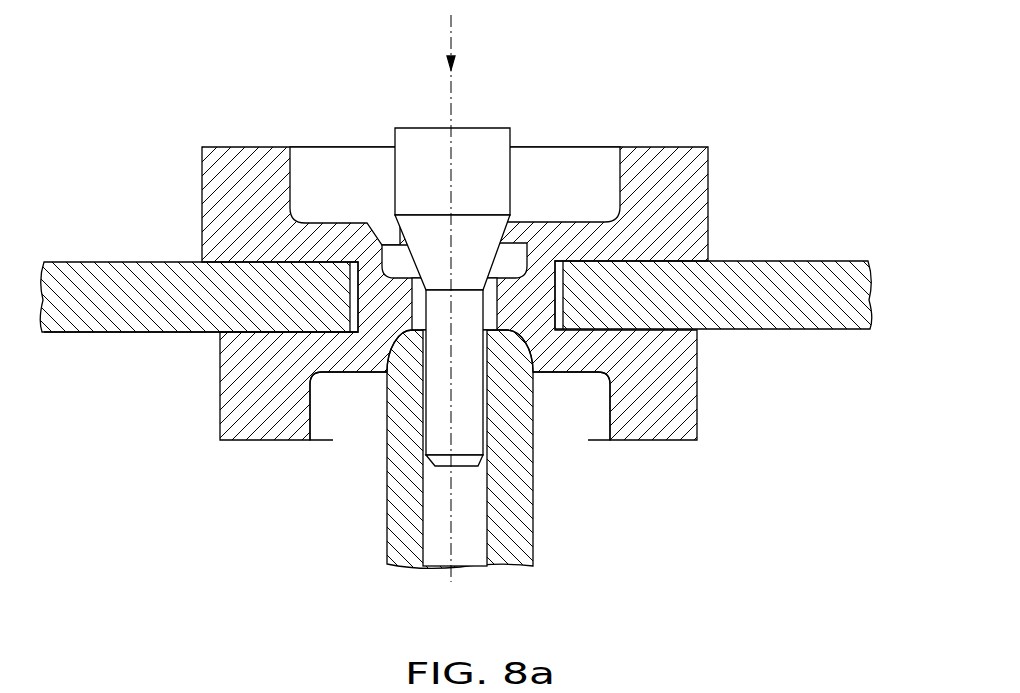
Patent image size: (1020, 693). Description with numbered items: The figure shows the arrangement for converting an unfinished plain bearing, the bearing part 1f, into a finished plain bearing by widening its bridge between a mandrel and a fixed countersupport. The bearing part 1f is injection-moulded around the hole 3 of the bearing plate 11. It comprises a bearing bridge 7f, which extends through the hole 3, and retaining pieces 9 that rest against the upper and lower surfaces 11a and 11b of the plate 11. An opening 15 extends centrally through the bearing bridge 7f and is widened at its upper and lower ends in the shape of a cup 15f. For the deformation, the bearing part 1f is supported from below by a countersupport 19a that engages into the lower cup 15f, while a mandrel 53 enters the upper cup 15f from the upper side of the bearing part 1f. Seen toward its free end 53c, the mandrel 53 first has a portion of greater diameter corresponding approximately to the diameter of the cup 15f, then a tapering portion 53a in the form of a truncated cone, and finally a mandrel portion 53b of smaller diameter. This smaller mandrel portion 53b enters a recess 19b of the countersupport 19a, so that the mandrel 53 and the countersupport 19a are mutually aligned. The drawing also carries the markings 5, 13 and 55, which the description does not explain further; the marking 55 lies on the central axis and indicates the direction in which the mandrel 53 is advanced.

The bearing part 1f is at (722, 127).
The hole 3 is at (558, 383).
The lower cavity 5 is at (378, 356).
The bearing bridge 7f is at (530, 295).
The retaining pieces 9 is at (200, 203).
The bearing plate 11 is at (780, 277).
The surface 11a is at (199, 253).
The surface 11b is at (201, 365).
The axis 13 is at (454, 151).
The opening 15 is at (483, 250).
The cup 15f is at (385, 257).
The countersupport 19a is at (520, 473).
The recess 19b is at (480, 527).
The mandrel 53 is at (427, 305).
The tapering portion 53a is at (413, 214).
The mandrel portion 53b is at (433, 400).
The free end 53c is at (440, 468).
The insertion direction 55 is at (449, 33).